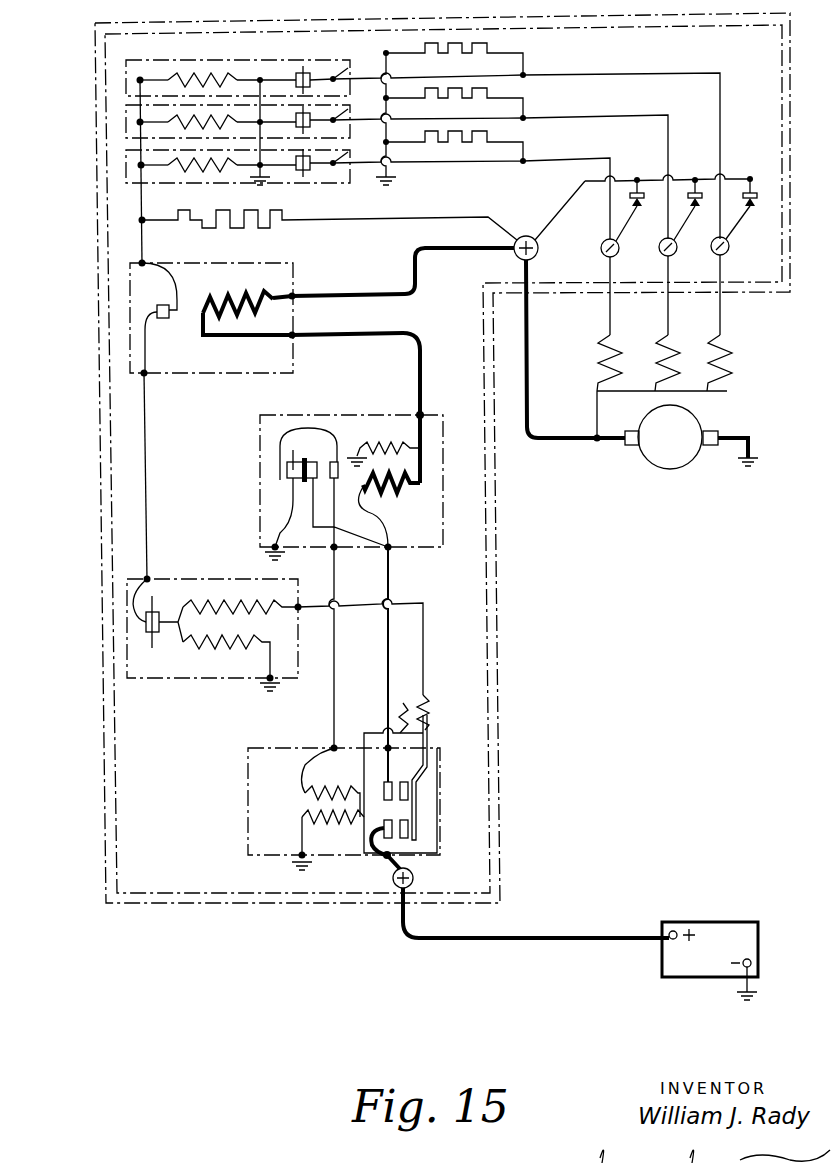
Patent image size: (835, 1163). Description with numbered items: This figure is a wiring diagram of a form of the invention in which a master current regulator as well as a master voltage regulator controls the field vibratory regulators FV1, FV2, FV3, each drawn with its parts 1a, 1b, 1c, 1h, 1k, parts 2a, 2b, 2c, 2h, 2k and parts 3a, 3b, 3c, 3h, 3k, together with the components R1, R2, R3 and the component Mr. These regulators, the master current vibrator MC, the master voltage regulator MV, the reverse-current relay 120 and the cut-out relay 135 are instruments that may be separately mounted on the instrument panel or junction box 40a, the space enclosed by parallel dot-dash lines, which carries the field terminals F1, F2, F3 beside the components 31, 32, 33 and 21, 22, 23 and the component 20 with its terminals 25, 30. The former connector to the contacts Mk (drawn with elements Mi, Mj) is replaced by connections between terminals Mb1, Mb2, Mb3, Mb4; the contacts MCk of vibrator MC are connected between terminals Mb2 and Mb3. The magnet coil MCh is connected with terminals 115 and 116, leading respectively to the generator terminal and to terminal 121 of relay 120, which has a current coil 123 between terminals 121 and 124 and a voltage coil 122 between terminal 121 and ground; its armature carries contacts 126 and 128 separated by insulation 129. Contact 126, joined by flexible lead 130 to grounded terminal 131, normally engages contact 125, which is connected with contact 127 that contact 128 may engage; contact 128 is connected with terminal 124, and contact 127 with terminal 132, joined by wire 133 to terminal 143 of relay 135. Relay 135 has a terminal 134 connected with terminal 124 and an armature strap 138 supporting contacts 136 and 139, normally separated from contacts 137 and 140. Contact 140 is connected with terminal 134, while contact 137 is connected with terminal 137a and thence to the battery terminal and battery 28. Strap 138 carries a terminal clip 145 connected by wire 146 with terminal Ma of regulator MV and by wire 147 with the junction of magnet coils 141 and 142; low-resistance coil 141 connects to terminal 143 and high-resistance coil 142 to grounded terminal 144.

The field vibratory regulator FV3 is at (126, 66).
The field vibratory regulator FV2 is at (126, 116).
The field vibratory regulator FV1 is at (126, 161).
The regulator connection 3b is at (140, 80).
The regulator connection 2b is at (140, 122).
The regulator connection 1b is at (141, 165).
The regulator resistance 3h is at (205, 75).
The regulator resistance 2h is at (205, 117).
The regulator resistance 1h is at (208, 160).
The regulator junction 3c is at (267, 61).
The regulator junction 2c is at (271, 105).
The regulator junction 1c is at (271, 150).
The regulator contact 3k is at (300, 72).
The regulator contact 2k is at (300, 114).
The regulator contact 1k is at (300, 157).
The regulator switch blade 3a is at (345, 66).
The regulator switch blade 2a is at (340, 115).
The regulator switch blade 1a is at (336, 160).
The field resistor R3 is at (490, 43).
The field resistor R2 is at (490, 89).
The field resistor R1 is at (490, 133).
The motor control resistor Mr is at (236, 210).
The terminal Mb4 is at (142, 220).
The terminal Mb3 is at (142, 263).
The terminal Mb2 is at (144, 373).
The terminal Mb1 is at (147, 579).
The master current vibrator MC is at (130, 312).
The contacts MCk is at (163, 318).
The magnet coil MCh is at (255, 300).
The master voltage regulator MV is at (127, 626).
The contacts Mk is at (152, 640).
The motor voltage relay resistance Mi is at (226, 600).
The motor voltage relay resistance Mj is at (228, 650).
The terminal Ma is at (300, 608).
The field terminal F1 is at (601, 249).
The field terminal F2 is at (659, 249).
The field terminal F3 is at (711, 248).
The rectifier 31 is at (644, 200).
The rectifier 32 is at (701, 200).
The rectifier 33 is at (756, 200).
The field winding resistor 21 is at (600, 297).
The field winding resistor 22 is at (658, 297).
The field winding resistor 23 is at (712, 297).
The motor 20 is at (676, 468).
The motor terminal 25 is at (628, 420).
The motor ground terminal 30 is at (710, 430).
The terminal 115 is at (298, 294).
The terminal 116 is at (298, 333).
The reverse-current relay 120 is at (351, 470).
The terminal 121 is at (423, 413).
The voltage coil 122 is at (383, 446).
The series or current coil 123 is at (394, 492).
The terminal 124 is at (390, 550).
The contact 125 is at (287, 470).
The contact 126 is at (284, 442).
The contact 127 is at (358, 496).
The contact 128 is at (331, 462).
The insulation 129 is at (305, 458).
The flexible lead 130 is at (292, 510).
The grounded terminal 131 is at (272, 546).
The terminal 132 is at (336, 550).
The wire 133 is at (336, 655).
The terminal 134 is at (389, 750).
The cut-out relay 135 is at (437, 780).
The contact 136 is at (408, 840).
The contact 137 is at (374, 838).
The terminal 137a is at (384, 862).
The strap 138 is at (410, 811).
The contact 139 is at (393, 810).
The contact 140 is at (382, 786).
The magnet coil 141 is at (332, 782).
The magnet coil 142 is at (300, 817).
The terminal 143 is at (333, 747).
The terminal 144 is at (300, 855).
The terminal clip 145 is at (430, 738).
The wire 146 is at (432, 706).
The wire 147 is at (394, 710).
The instrument panel or junction box 40a is at (499, 618).
The battery 28 is at (760, 940).